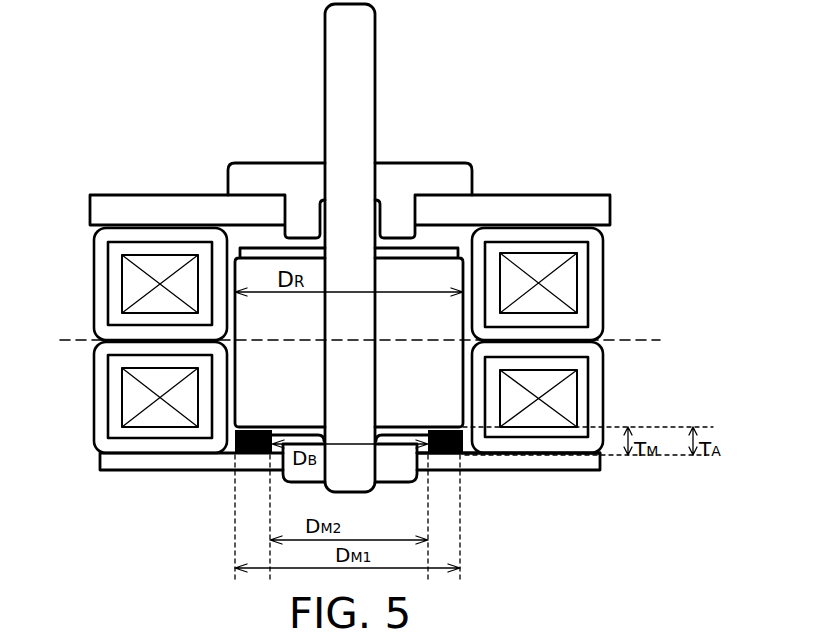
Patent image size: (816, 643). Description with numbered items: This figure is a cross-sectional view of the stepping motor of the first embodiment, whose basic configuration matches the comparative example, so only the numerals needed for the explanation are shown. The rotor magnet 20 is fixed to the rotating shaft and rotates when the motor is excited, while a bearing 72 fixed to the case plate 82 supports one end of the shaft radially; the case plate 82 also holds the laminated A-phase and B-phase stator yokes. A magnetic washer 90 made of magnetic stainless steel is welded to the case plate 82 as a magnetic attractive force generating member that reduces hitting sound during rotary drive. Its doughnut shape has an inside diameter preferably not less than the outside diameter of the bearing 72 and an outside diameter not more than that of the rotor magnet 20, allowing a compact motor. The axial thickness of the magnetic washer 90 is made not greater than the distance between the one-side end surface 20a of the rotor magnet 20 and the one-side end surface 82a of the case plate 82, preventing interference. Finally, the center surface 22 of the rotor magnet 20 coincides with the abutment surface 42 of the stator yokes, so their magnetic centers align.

The rotor magnet 20 is at (277, 398).
The one-side end surface of the rotor magnet 20a is at (456, 455).
The center surface of the rotor magnet 22 is at (438, 340).
The abutment surface 42 is at (637, 340).
The bearing 72 is at (390, 482).
The case plate 82 is at (577, 462).
The one-side end surface of the case plate 82a is at (448, 427).
The magnetic washer 90 is at (452, 455).